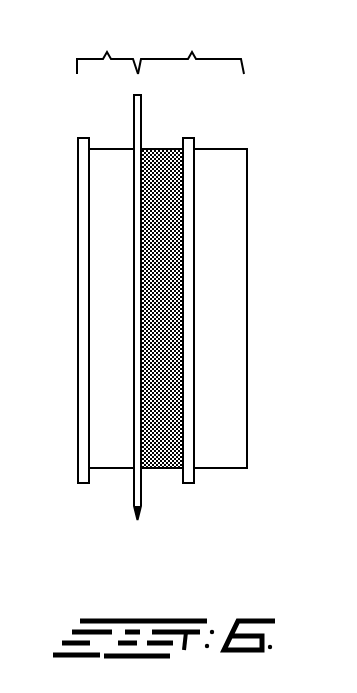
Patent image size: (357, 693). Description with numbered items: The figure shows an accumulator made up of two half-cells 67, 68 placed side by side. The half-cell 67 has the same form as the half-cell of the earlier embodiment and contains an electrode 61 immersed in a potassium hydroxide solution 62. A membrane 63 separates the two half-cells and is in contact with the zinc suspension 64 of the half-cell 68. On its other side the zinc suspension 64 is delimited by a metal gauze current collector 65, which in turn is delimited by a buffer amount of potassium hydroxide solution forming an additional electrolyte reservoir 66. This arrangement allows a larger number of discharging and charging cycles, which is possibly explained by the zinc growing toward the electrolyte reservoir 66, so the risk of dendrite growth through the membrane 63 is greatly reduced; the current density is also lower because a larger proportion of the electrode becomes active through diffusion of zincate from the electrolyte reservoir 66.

The electrode 61 is at (61, 358).
The potassium hydroxide solution 62 is at (102, 363).
The membrane 63 is at (125, 336).
The zinc suspension 64 is at (162, 363).
The current collector 65 is at (198, 358).
The electrolyte reservoir 66 is at (223, 363).
The half-cell 67 is at (107, 47).
The half-cell 68 is at (191, 47).